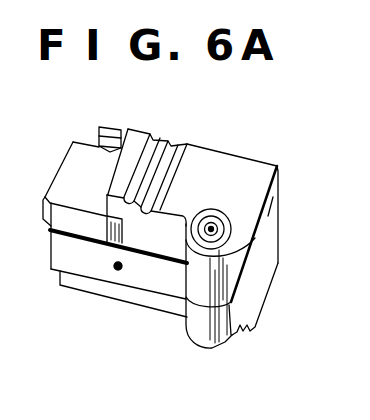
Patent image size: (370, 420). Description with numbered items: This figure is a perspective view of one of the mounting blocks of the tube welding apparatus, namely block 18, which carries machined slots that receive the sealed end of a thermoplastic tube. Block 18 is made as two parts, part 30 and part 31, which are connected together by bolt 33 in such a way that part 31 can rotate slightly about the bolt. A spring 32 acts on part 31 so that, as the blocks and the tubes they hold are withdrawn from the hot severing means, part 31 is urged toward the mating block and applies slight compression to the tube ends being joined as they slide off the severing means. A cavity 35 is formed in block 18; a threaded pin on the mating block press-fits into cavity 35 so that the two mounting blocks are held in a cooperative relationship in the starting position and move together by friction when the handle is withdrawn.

The block 18 is at (233, 168).
The part 30 is at (279, 246).
The part 31 is at (280, 175).
The spring 32 is at (114, 128).
The bolt 33 is at (213, 230).
The cavity 35 is at (116, 270).